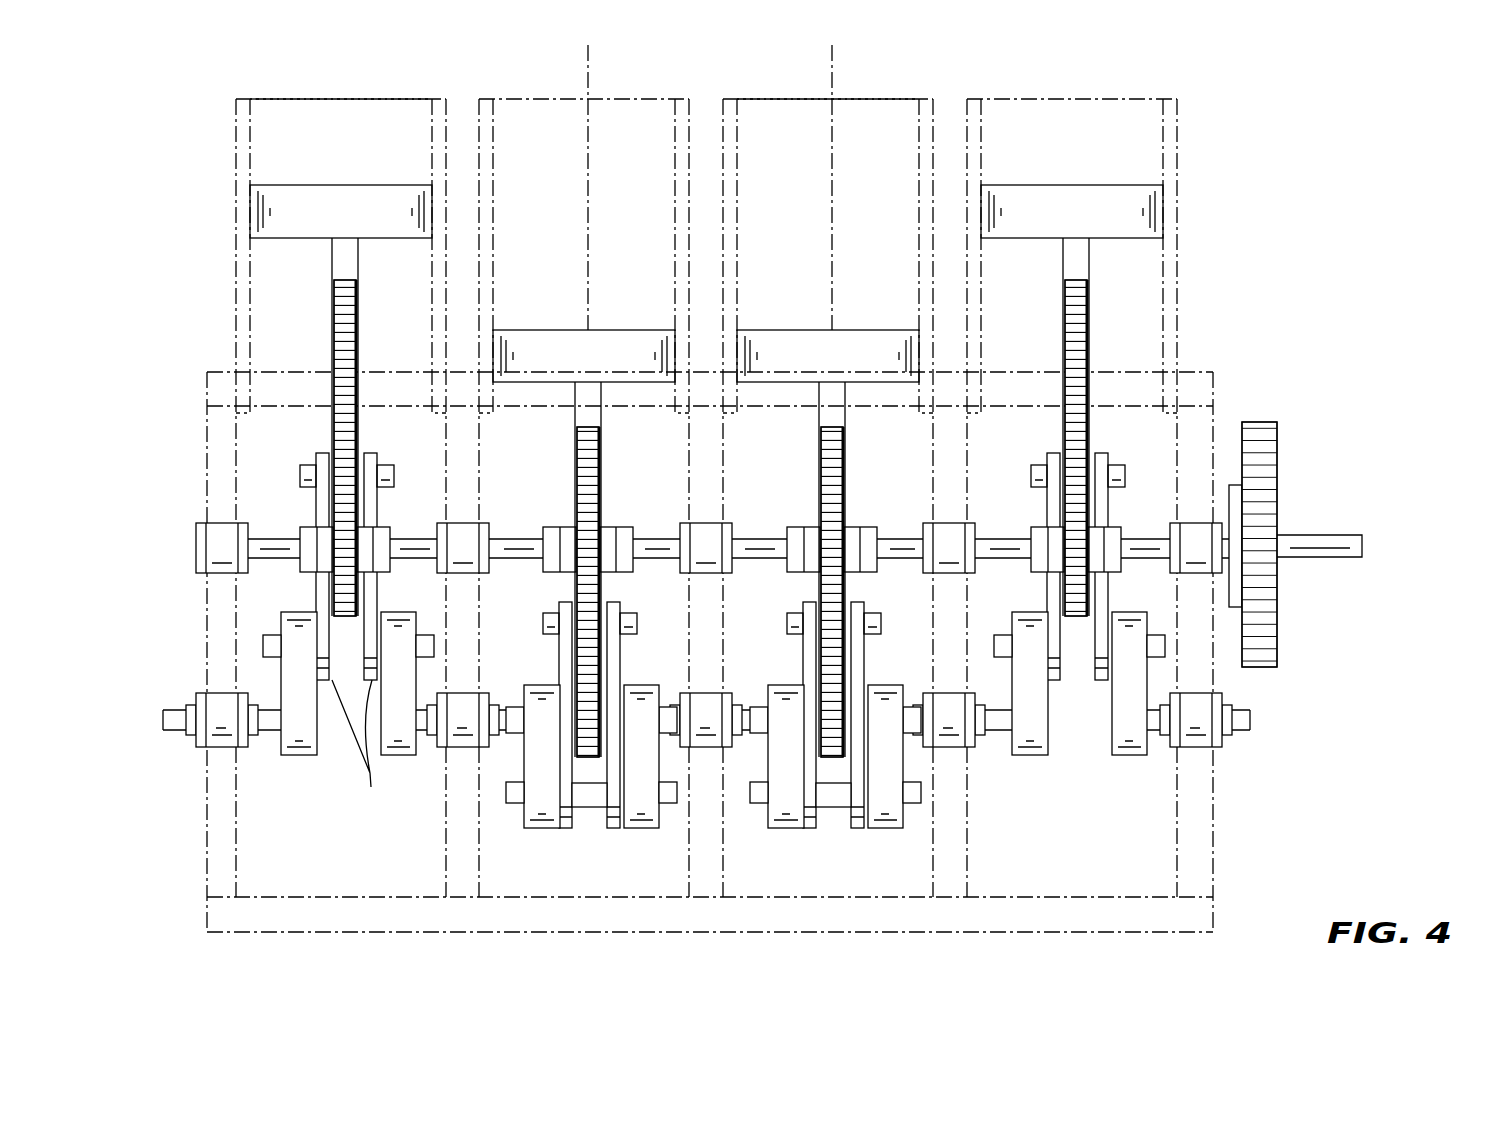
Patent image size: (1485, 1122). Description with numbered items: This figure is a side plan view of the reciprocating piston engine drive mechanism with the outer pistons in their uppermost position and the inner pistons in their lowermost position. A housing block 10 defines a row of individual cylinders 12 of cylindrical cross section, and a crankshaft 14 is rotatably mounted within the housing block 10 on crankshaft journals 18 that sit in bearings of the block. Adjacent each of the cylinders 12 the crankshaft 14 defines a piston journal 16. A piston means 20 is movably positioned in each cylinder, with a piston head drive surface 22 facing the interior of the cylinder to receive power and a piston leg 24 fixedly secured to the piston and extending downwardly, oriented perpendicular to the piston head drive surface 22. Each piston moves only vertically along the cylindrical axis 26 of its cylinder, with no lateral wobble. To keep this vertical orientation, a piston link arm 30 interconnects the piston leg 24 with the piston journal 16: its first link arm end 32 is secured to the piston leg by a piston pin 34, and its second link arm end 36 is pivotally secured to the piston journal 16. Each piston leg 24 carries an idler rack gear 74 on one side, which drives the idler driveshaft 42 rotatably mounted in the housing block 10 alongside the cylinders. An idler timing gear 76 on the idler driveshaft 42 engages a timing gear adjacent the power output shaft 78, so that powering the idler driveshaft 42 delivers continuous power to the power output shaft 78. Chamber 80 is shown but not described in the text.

The housing block 10 is at (1197, 377).
The cylinders 12 is at (737, 153).
The crankshaft 14 is at (267, 727).
The piston journals 16 is at (592, 797).
The crankshaft journals 18 is at (230, 735).
The piston means 20 is at (299, 221).
The piston head drive surface 22 is at (373, 185).
The piston leg 24 is at (335, 257).
The cylindrical axis 26 is at (585, 68).
The piston link arm 30 is at (377, 500).
The first link arm end 32 is at (372, 453).
The piston pin 34 is at (388, 470).
The second link arm end 36 is at (872, 865).
The idler driveshaft 42 is at (1004, 540).
The idler rack gear 74 is at (342, 320).
The idler timing gear 76 is at (1262, 438).
The power output shaft 78 is at (1295, 545).
The third cylinder chamber 80 is at (858, 257).